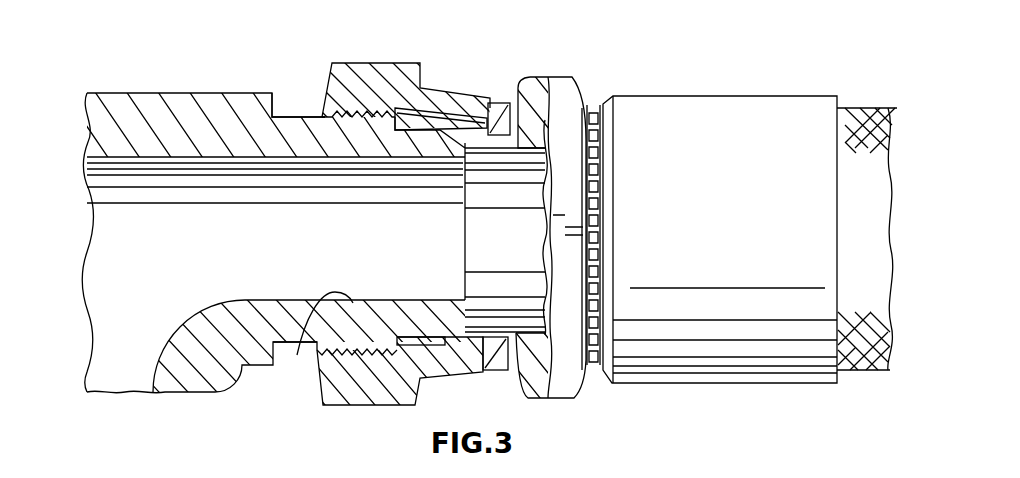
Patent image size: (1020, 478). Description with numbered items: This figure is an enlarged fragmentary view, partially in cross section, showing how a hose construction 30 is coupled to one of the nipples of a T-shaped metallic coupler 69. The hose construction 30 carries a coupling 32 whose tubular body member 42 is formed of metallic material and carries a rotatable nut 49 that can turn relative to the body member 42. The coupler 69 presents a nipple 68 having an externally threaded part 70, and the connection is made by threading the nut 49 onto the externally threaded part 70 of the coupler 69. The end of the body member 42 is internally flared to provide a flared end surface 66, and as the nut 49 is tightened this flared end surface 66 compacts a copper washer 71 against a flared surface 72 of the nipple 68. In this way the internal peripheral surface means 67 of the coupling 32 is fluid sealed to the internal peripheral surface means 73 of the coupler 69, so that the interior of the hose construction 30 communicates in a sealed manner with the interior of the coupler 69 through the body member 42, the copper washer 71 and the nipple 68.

The hose construction 30 is at (772, 86).
The coupling 32 is at (546, 90).
The tubular body member 42 is at (582, 88).
The rotatable nut 49 is at (405, 69).
The flared end surface 66 is at (458, 316).
The internal peripheral surface means 67 is at (585, 287).
The nipple 68 is at (290, 112).
The T-shaped metallic coupler 69 is at (145, 97).
The externally threaded part 70 is at (352, 110).
The copper washer 71 is at (433, 110).
The flared surface 72 is at (467, 97).
The internal peripheral surface means 73 is at (304, 346).